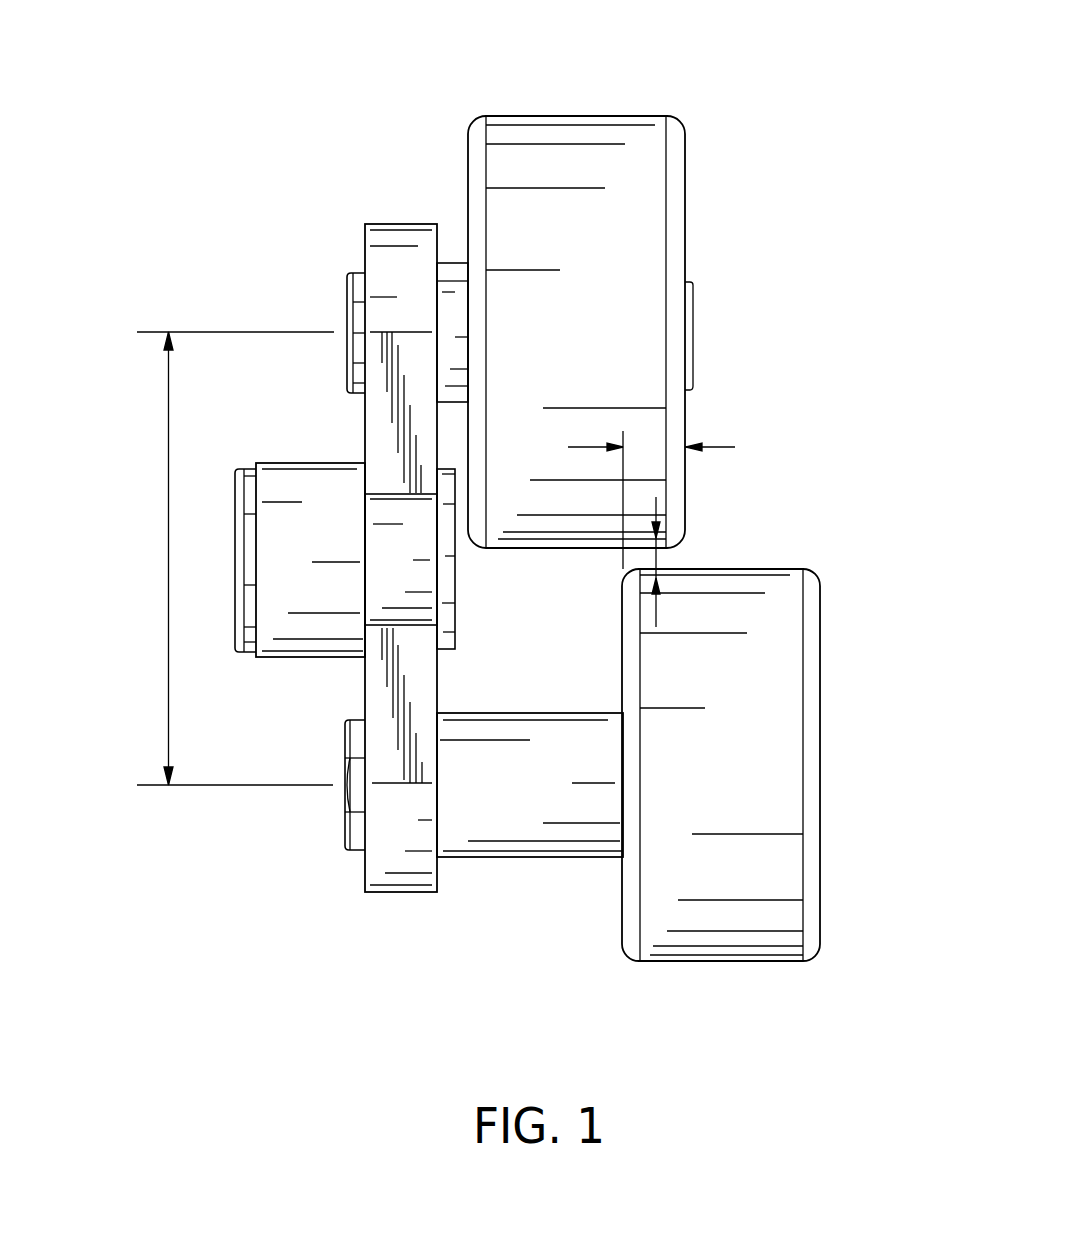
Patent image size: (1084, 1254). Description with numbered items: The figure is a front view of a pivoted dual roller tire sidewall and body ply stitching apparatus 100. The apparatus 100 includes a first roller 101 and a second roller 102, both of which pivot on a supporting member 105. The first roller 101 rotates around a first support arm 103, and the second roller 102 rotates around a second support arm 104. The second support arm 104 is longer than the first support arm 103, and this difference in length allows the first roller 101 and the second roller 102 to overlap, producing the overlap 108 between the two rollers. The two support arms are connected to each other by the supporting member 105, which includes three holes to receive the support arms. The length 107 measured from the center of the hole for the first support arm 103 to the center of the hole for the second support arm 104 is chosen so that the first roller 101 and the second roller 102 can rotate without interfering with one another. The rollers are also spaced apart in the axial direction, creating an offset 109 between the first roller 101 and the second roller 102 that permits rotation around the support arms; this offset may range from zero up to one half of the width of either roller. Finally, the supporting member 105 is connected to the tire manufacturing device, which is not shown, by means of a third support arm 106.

The pivoted dual roller tire sidewall and body ply stitching apparatus 100 is at (775, 141).
The first roller 101 is at (584, 138).
The second roller 102 is at (766, 682).
The first support arm 103 is at (450, 276).
The second support arm 104 is at (550, 831).
The supporting member 105 is at (403, 877).
The third support arm 106 is at (296, 630).
The length 107 is at (168, 560).
The overlap 108 is at (645, 447).
The offset 109 is at (657, 560).